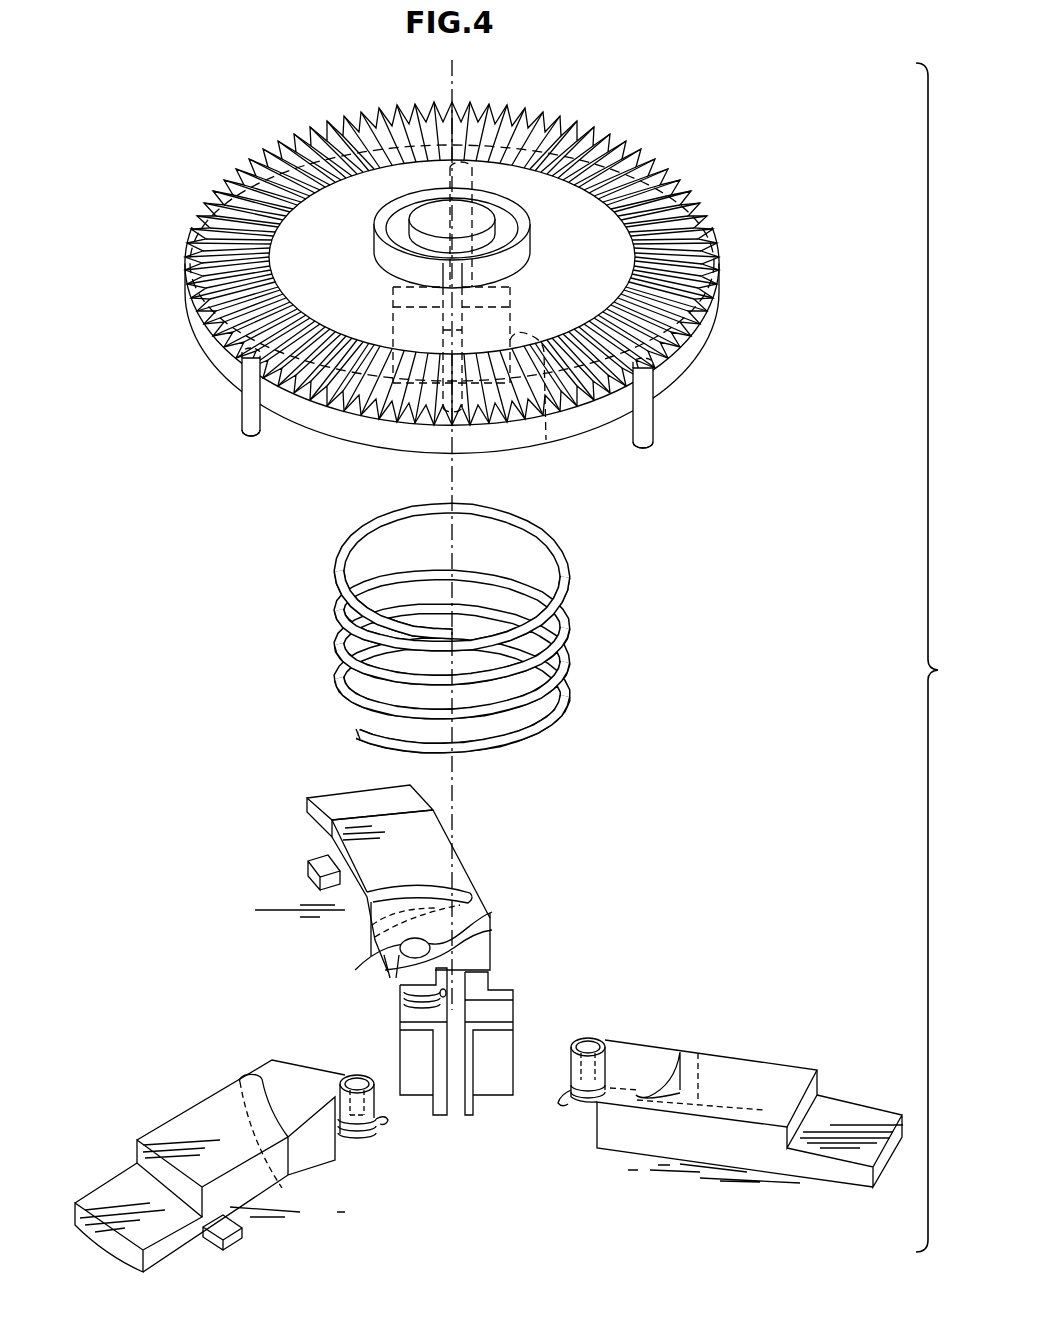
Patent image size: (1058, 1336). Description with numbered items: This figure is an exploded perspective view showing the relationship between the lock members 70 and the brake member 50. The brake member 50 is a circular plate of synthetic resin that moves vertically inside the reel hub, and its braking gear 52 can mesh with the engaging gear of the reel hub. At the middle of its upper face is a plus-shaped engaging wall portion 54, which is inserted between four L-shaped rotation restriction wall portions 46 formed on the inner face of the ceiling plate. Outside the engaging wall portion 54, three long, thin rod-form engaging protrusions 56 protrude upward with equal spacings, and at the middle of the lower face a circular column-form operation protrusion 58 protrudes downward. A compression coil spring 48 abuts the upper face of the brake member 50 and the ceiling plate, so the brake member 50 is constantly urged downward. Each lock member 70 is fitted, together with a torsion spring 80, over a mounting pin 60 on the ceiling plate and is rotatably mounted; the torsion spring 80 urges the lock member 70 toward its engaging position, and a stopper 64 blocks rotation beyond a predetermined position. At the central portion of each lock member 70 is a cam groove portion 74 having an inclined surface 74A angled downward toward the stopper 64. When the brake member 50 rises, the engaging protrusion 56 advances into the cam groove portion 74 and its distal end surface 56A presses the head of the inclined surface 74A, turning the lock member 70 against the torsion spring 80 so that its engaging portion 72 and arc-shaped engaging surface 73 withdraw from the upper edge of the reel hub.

The rotation restriction wall portion 46 is at (492, 1088).
The compression coil spring 48 is at (565, 620).
The brake member 50 is at (450, 286).
The braking gear 52 is at (683, 197).
The engaging wall portion 54 is at (546, 442).
The engaging protrusion 56 is at (472, 177).
The distal end surface 56A is at (252, 440).
The operation protrusion 58 is at (427, 212).
The mounting pin 60 is at (400, 950).
The stopper 64 is at (312, 858).
The lock member 70 is at (495, 1013).
The engaging portion 72 is at (353, 802).
The engaging surface 73 is at (424, 810).
The cam groove portion 74 is at (402, 891).
The inclined surface 74A is at (471, 893).
The torsion spring 80 is at (400, 990).